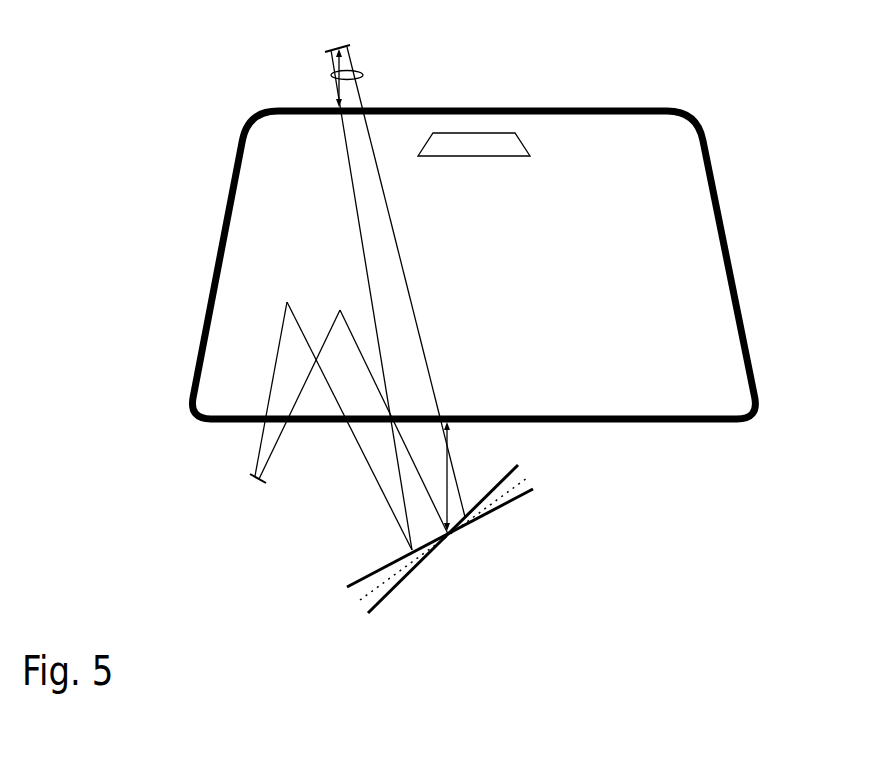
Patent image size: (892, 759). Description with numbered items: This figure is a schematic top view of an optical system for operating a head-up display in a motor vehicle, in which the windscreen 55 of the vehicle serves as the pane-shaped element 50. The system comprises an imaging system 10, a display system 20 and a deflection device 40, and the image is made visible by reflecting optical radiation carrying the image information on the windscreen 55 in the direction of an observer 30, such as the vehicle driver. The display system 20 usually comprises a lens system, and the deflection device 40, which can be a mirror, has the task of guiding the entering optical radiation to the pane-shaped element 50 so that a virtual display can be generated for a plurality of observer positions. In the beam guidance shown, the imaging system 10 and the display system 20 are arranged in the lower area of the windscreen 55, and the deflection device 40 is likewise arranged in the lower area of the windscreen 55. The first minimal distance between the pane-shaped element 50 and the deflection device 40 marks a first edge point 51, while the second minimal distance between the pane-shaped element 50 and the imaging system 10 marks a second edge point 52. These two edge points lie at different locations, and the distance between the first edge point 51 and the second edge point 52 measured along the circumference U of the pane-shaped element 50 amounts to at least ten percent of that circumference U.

The imaging system 10 is at (343, 46).
The display system 20 is at (361, 75).
The observer 30 is at (252, 476).
The deflection device 40 is at (512, 504).
The pane-shaped element 50 is at (427, 265).
The windscreen 55 is at (237, 166).
The first edge point 51 is at (447, 416).
The second edge point 52 is at (336, 117).
The circumference U is at (216, 255).